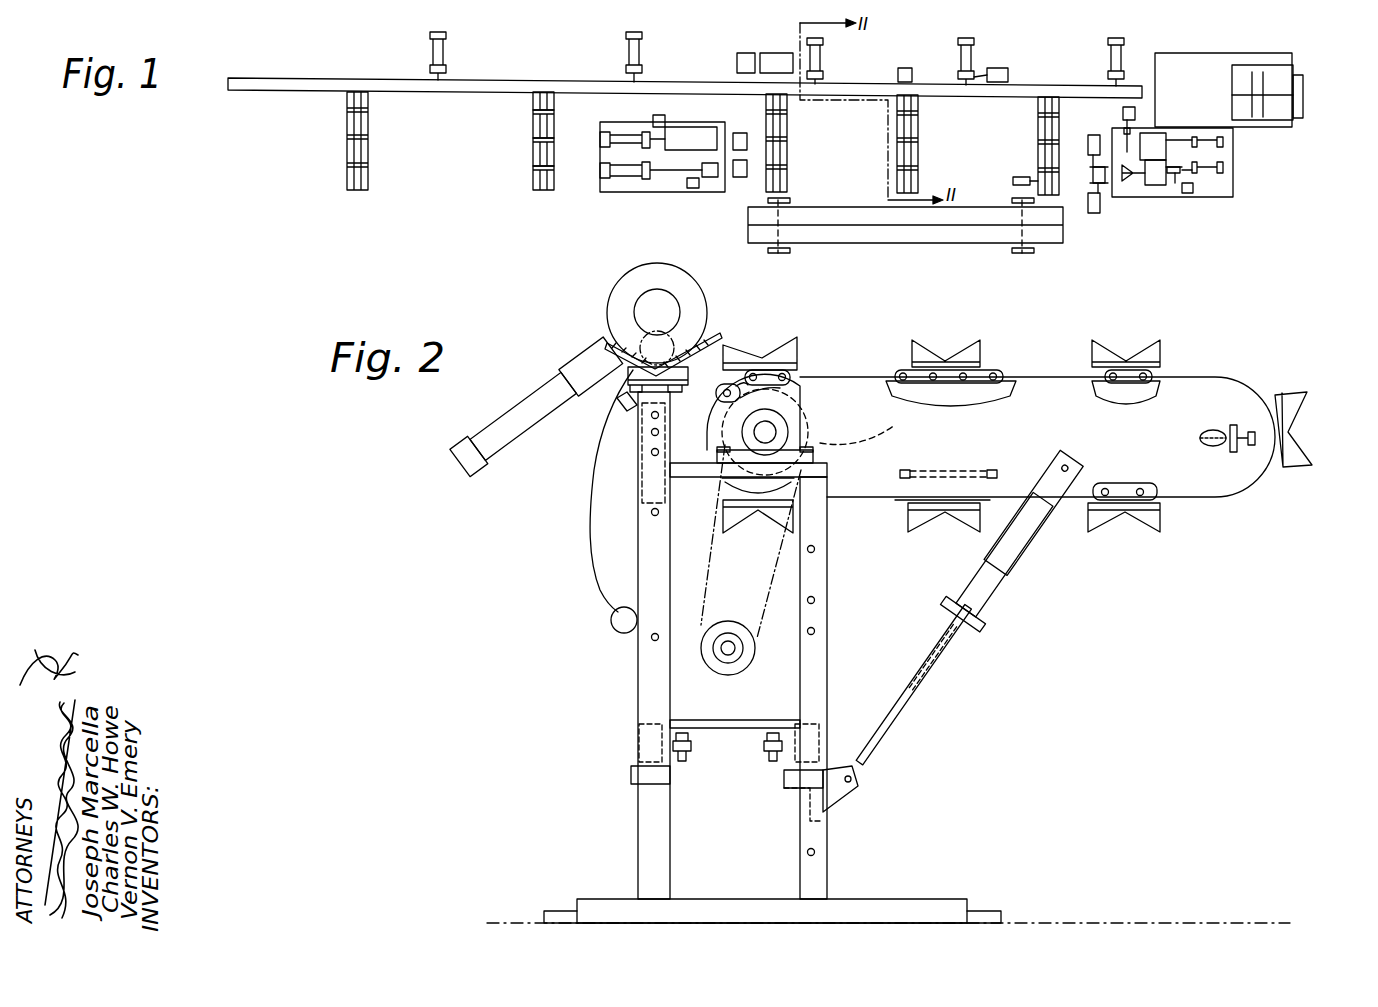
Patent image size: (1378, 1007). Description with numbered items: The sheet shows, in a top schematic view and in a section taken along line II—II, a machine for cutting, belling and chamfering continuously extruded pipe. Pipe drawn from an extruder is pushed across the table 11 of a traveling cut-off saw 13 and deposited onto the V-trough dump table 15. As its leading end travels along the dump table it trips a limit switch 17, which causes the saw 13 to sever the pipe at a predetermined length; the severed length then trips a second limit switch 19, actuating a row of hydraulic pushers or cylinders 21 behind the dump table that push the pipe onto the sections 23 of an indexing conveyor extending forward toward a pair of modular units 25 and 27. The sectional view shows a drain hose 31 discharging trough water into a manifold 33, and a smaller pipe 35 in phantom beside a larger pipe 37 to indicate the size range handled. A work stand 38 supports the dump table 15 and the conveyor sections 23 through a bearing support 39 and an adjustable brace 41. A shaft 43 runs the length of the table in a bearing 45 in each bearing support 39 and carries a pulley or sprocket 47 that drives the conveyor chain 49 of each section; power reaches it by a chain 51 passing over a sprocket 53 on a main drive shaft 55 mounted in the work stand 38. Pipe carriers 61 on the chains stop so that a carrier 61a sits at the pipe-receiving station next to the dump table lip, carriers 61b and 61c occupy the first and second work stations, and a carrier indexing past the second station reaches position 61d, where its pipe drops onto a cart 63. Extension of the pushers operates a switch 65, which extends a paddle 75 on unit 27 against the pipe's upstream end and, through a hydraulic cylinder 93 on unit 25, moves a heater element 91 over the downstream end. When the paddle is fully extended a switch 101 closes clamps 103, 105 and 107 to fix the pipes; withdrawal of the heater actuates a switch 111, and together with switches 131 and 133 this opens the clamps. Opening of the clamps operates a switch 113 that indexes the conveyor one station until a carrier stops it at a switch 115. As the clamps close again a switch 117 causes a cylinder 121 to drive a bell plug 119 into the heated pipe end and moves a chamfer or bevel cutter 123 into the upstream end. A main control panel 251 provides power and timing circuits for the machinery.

In FIG. 1, the table 11 is at (1178, 62).
In FIG. 1, the traveling cut-off saw 13 is at (1258, 72).
In FIG. 1, the dump table 15 is at (1020, 86).
In FIG. 2, the dump table 15 is at (720, 337).
In FIG. 1, the limit switch 17 is at (905, 68).
In FIG. 1, the second limit switch 19 is at (737, 64).
In FIG. 1, the hydraulic pushers or cylinders 21 is at (447, 52).
In FIG. 2, the hydraulic pushers or cylinders 21 is at (526, 416).
In FIG. 1, the conveyor sections 23 is at (368, 115).
In FIG. 2, the conveyor sections 23 is at (1195, 477).
In FIG. 1, the modular unit 25 is at (632, 192).
In FIG. 1, the modular unit 27 is at (1233, 185).
In FIG. 2, the drain hose 31 is at (592, 470).
In FIG. 2, the manifold 33 is at (617, 624).
In FIG. 2, the smaller pipe 35 is at (641, 345).
In FIG. 2, the larger pipe 37 is at (625, 297).
In FIG. 2, the work stand 38 is at (650, 678).
In FIG. 2, the bearing support 39 is at (808, 471).
In FIG. 2, the adjustable brace 41 is at (985, 600).
In FIG. 2, the shaft 43 is at (768, 430).
In FIG. 2, the bearing 45 is at (790, 432).
In FIG. 2, the pulley or sprocket 47 is at (869, 431).
In FIG. 2, the conveyor chain 49 is at (790, 377).
In FIG. 2, the chain 51 is at (712, 590).
In FIG. 2, the sprocket 53 is at (724, 665).
In FIG. 2, the main drive shaft 55 is at (731, 640).
In FIG. 2, the pipe carriers 61 is at (926, 535).
In FIG. 1, the pipe carrier 61a is at (533, 108).
In FIG. 2, the pipe carrier 61a is at (790, 338).
In FIG. 1, the carrier 61b is at (533, 136).
In FIG. 2, the carrier 61b is at (985, 345).
In FIG. 1, the carrier 61c is at (533, 168).
In FIG. 2, the carrier 61c is at (1162, 352).
In FIG. 1, the carrier 61d is at (543, 190).
In FIG. 2, the carrier 61d is at (1300, 395).
In FIG. 1, the cart 63 is at (1050, 235).
In FIG. 1, the switch 65 is at (997, 68).
In FIG. 1, the paddle 75 is at (1125, 130).
In FIG. 1, the heater element 91 is at (715, 127).
In FIG. 1, the hydraulic cylinder 93 is at (623, 142).
In FIG. 1, the switch 101 is at (1135, 110).
In FIG. 1, the clamp 103 is at (742, 133).
In FIG. 1, the clamp 105 is at (742, 177).
In FIG. 1, the clamp 107 is at (1093, 176).
In FIG. 1, the switch 111 is at (660, 115).
In FIG. 1, the switch 113 is at (1093, 213).
In FIG. 1, the switch 115 is at (1013, 181).
In FIG. 1, the switch 117 is at (1092, 135).
In FIG. 1, the bell plug 119 is at (705, 178).
In FIG. 1, the cylinder 121 is at (628, 172).
In FIG. 1, the chamfer or bevel cutter 123 is at (1128, 182).
In FIG. 1, the switch 131 is at (678, 188).
In FIG. 1, the switch 133 is at (1193, 188).
In FIG. 1, the main control panel 251 is at (775, 53).